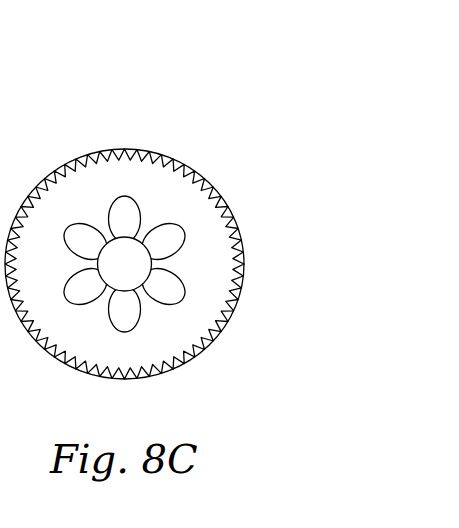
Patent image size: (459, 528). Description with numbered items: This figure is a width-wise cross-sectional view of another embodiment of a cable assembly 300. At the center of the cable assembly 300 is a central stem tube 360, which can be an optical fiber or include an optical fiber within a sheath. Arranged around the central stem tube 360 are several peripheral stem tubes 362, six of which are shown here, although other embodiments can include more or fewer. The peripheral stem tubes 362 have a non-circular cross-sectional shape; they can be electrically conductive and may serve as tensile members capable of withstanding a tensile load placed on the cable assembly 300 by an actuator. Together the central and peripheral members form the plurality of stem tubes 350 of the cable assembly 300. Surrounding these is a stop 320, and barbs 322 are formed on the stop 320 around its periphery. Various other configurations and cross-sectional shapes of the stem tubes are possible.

The cable assembly 300 is at (223, 92).
The stop 320 is at (67, 193).
The barbs 322 is at (105, 149).
The stem tubes 350 is at (171, 243).
The central stem tube 360 is at (125, 253).
The peripheral stem tubes 362 is at (125, 313).